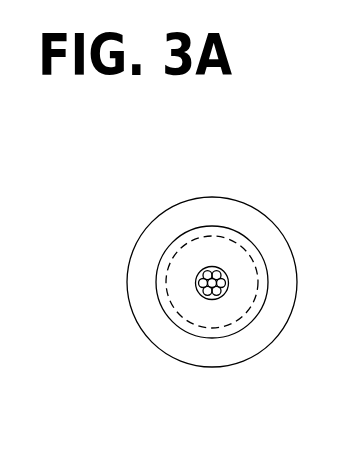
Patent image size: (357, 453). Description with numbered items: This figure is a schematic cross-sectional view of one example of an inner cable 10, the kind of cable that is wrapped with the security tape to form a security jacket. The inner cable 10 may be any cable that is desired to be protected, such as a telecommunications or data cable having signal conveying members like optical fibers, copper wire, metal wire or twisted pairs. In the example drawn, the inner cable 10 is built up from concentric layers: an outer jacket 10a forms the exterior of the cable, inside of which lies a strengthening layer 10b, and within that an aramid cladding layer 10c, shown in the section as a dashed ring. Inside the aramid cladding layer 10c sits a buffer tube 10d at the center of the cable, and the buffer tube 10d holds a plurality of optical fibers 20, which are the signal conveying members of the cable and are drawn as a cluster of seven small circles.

The inner cable 10 is at (172, 148).
The jacket 10a is at (163, 213).
The strengthening layer 10b is at (166, 250).
The aramid cladding layer 10c is at (216, 236).
The buffer tube 10d is at (213, 267).
The optical fibers 20 is at (221, 271).